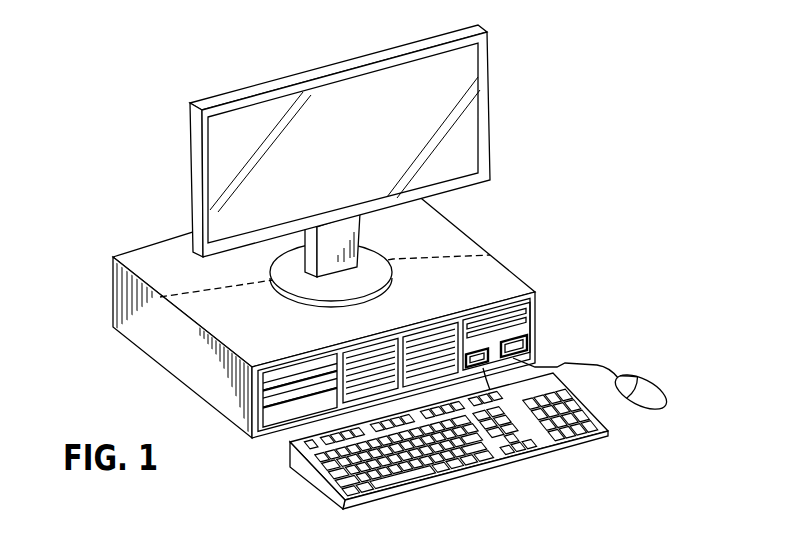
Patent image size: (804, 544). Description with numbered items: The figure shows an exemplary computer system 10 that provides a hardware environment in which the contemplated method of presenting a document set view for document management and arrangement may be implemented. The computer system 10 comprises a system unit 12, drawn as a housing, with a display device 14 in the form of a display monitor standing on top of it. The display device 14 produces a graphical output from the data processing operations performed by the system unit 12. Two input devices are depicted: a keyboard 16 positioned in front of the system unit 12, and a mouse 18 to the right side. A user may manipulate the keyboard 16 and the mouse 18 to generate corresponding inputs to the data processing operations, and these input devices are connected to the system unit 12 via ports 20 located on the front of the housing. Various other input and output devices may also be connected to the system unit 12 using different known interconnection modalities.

The computer system 10 is at (96, 132).
The system unit 12 is at (253, 333).
The display device 14 is at (358, 153).
The keyboard 16 is at (552, 446).
The mouse 18 is at (657, 387).
The ports 20 is at (515, 340).